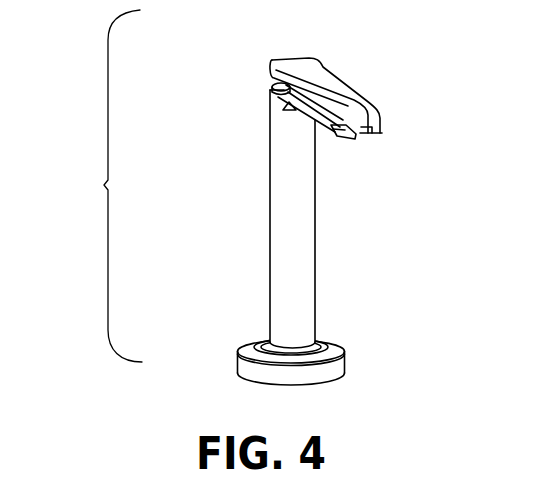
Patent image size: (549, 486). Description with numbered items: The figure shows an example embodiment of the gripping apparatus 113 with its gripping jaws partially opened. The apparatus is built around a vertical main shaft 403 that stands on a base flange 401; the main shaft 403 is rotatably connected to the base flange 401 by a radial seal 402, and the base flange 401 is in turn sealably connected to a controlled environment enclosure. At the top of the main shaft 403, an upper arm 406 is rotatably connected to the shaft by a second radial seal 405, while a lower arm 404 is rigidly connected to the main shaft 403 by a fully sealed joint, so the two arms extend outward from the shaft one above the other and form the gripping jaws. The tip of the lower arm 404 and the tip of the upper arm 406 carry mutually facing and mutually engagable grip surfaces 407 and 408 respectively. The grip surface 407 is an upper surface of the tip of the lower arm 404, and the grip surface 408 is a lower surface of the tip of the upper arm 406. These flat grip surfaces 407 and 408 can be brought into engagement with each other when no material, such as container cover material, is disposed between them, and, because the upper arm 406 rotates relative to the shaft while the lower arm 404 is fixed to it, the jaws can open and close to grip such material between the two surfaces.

The gripping apparatus 113 is at (105, 185).
The base flange 401 is at (240, 362).
The radial seal 402 is at (246, 342).
The main shaft 403 is at (269, 230).
The lower arm 404 is at (279, 100).
The radial seal 405 is at (270, 84).
The upper arm 406 is at (272, 66).
The grip surface 407 is at (352, 126).
The grip surface 408 is at (372, 134).